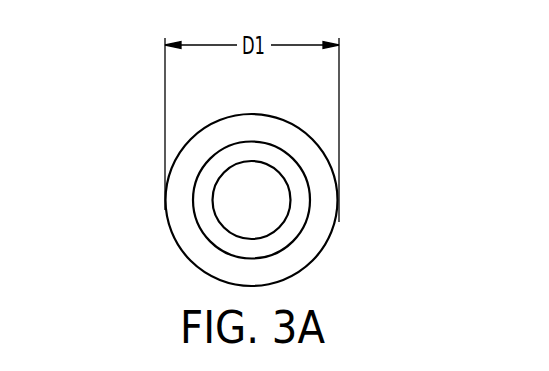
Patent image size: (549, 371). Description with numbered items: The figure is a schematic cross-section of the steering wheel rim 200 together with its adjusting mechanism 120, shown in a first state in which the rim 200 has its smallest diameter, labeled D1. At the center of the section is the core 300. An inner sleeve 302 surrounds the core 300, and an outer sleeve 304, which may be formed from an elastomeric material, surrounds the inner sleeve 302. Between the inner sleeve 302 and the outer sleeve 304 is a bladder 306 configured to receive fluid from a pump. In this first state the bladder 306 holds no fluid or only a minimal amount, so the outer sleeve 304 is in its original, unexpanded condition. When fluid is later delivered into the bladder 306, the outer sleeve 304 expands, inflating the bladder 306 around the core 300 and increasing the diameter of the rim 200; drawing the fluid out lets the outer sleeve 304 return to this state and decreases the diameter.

The adjusting mechanism 120 is at (140, 138).
The rim 200 is at (383, 90).
The core 300 is at (251, 168).
The inner sleeve 302 is at (307, 215).
The outer sleeve 304 is at (182, 254).
The bladder 306 is at (308, 247).